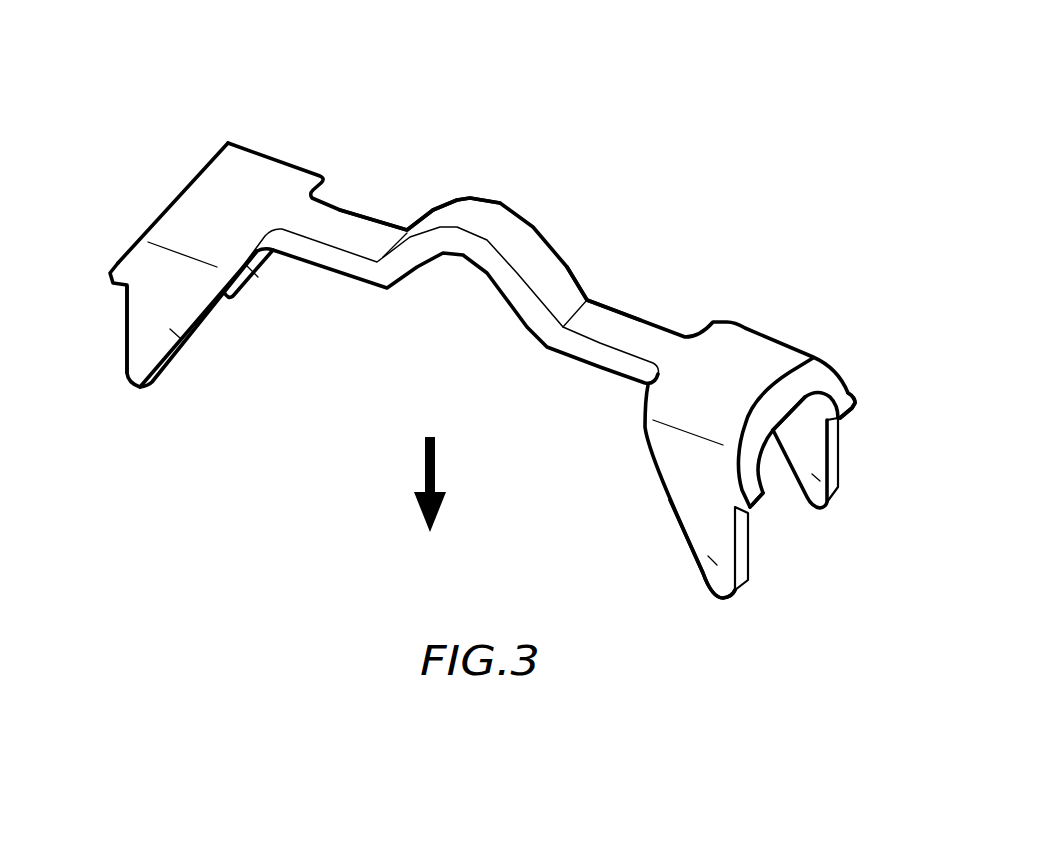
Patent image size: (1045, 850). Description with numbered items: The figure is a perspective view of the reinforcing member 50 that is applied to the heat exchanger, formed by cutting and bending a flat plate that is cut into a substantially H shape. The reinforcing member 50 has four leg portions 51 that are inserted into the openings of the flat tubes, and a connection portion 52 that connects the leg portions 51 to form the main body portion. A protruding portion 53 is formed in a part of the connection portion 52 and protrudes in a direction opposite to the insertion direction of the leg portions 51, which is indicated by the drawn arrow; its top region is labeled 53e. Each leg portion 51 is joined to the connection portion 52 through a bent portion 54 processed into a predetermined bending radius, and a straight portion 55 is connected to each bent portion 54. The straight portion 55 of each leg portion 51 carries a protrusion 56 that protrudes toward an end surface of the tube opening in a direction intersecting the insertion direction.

The reinforcing member 50 is at (651, 110).
The leg portion 51 is at (175, 333).
The connection portion 52 is at (348, 227).
The protruding portion 53 is at (523, 237).
The top portion of coupling portion 53e is at (482, 207).
The bent portion 54 is at (162, 240).
The straight portion 55 is at (125, 338).
The protrusion 56 is at (118, 263).